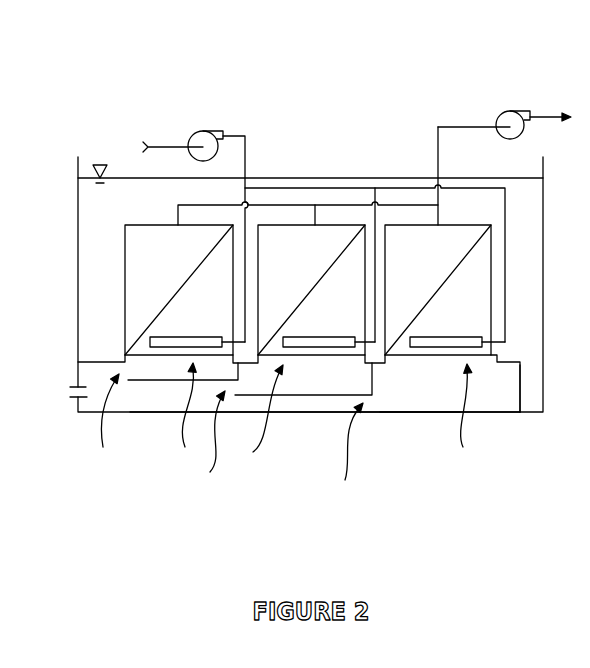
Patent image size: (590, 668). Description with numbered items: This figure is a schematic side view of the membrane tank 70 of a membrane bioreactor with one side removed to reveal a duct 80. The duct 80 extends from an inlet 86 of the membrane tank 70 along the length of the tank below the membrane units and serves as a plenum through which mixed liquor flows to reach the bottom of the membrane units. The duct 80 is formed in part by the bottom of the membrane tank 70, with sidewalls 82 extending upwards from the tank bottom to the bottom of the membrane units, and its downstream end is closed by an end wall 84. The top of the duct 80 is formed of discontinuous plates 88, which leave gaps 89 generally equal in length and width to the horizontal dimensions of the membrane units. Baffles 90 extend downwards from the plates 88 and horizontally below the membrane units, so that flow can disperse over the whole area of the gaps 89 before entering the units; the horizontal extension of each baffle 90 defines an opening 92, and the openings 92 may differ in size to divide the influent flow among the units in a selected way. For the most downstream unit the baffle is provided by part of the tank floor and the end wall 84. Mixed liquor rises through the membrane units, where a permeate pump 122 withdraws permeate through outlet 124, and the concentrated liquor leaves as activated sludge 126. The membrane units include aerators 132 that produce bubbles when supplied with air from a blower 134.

The membrane tank 70 is at (543, 290).
The duct 80 is at (442, 397).
The sidewalls 82 is at (400, 404).
The end wall 84 is at (520, 393).
The inlet 86 is at (72, 402).
The plates 88 is at (97, 361).
The gaps 89 is at (328, 417).
The baffles 90 is at (157, 381).
The opening 92 is at (223, 435).
The permeate pump 122 is at (515, 112).
The outlet 124 is at (545, 117).
The activated sludge 126 is at (121, 214).
The aerators 132 is at (162, 336).
The blower 134 is at (202, 130).